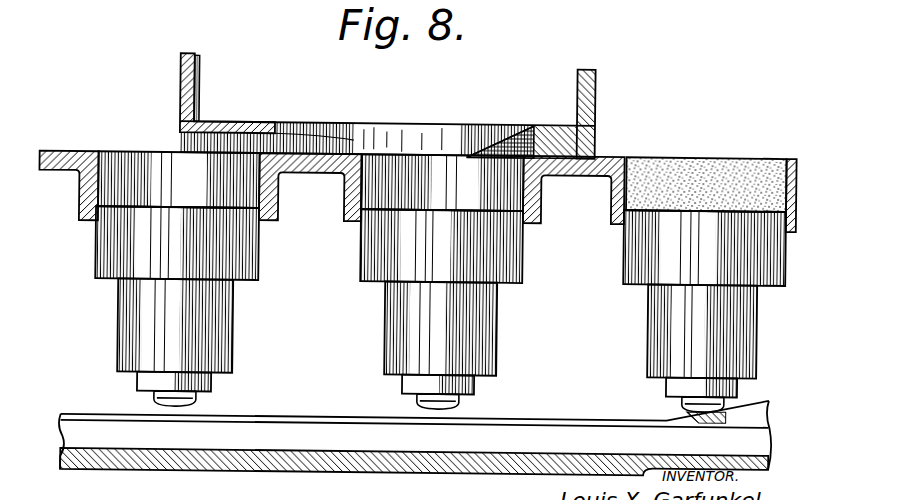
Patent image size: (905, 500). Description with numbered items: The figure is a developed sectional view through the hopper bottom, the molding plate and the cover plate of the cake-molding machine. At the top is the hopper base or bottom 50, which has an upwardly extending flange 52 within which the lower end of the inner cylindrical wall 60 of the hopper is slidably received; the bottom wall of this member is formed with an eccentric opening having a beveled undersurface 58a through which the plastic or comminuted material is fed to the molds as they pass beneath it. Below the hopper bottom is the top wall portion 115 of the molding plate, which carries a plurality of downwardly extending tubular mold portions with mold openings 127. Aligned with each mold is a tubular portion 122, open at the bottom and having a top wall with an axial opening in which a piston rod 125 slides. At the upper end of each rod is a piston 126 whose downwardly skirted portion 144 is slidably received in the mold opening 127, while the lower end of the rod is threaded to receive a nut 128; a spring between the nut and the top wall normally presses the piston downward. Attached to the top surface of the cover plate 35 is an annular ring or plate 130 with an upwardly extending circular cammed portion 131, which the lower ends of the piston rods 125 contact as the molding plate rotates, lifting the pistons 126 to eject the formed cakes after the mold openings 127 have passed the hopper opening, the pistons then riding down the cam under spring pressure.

The cover plate 35 is at (322, 474).
The hopper base or bottom 50 is at (461, 114).
The upwardly extending flange 52 is at (181, 80).
The beveled undersurface 58a is at (543, 146).
The inner cylindrical wall 60 is at (195, 78).
The top wall portion 115 is at (609, 155).
The tubular portion 122 is at (222, 331).
The piston rod 125 is at (198, 399).
The piston 126 is at (150, 213).
The mold opening 127 is at (140, 172).
The nut 128 is at (207, 384).
The annular ring or plate 130 is at (602, 424).
The circular cammed portion 131 is at (550, 417).
The downwardly skirted portion 144 is at (258, 262).